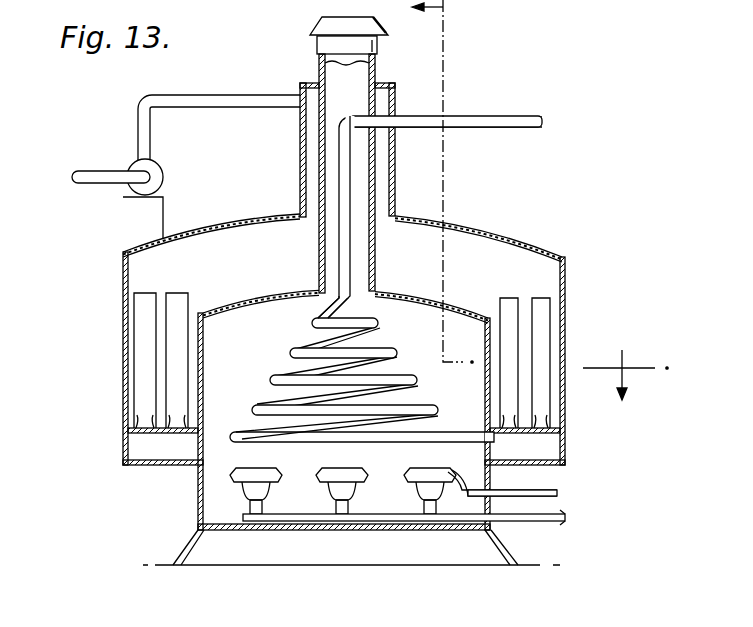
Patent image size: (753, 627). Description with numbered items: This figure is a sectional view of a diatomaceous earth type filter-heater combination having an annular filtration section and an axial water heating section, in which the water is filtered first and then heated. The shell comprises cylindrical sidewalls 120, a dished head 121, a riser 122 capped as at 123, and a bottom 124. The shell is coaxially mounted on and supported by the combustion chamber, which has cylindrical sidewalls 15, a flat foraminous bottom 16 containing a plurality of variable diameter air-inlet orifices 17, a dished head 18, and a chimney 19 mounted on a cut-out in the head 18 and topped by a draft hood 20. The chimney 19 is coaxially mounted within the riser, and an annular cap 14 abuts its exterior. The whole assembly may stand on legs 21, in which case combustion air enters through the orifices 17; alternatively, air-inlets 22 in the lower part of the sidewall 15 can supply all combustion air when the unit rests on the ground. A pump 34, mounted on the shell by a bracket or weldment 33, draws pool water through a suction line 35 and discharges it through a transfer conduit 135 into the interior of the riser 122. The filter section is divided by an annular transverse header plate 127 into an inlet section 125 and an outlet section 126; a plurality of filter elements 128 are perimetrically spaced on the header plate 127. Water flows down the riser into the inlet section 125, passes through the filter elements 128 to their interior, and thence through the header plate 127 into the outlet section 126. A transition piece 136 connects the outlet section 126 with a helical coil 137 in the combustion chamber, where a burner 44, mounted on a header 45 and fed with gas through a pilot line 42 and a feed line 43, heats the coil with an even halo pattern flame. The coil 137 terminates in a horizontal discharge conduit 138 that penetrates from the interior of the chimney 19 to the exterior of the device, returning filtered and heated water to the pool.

The cap 14 is at (541, 200).
The cylindrical sidewalls 15 is at (204, 345).
The flat foraminous bottom 16 is at (393, 532).
The air-inlet orifices 17 is at (228, 512).
The head 18 is at (452, 302).
The chimney 19 is at (319, 72).
The draft hood 20 is at (322, 25).
The legs 21 is at (185, 548).
The alternate air-inlets 22 is at (217, 493).
The bracket or weldment 33 is at (165, 208).
The pump 34 is at (160, 170).
The suction line 35 is at (109, 193).
The pilot line 42 is at (560, 496).
The feed line 43 is at (548, 522).
The burner 44 is at (278, 488).
The header 45 is at (340, 522).
The cylindrical sidewalls 120 is at (566, 328).
The dished heads 121 is at (497, 229).
The risers 122 is at (300, 161).
The cap 123 is at (384, 86).
The bottoms 124 is at (548, 468).
The inlet section 125 is at (430, 260).
The outlet section 126 is at (550, 460).
The annular transverse header plate 127 is at (132, 437).
The filter elements 128 is at (175, 324).
The transfer conduit 135 is at (233, 76).
The transition piece 136 is at (480, 442).
The helical coil 137 is at (412, 383).
The horizontal discharge conduit 138 is at (512, 117).